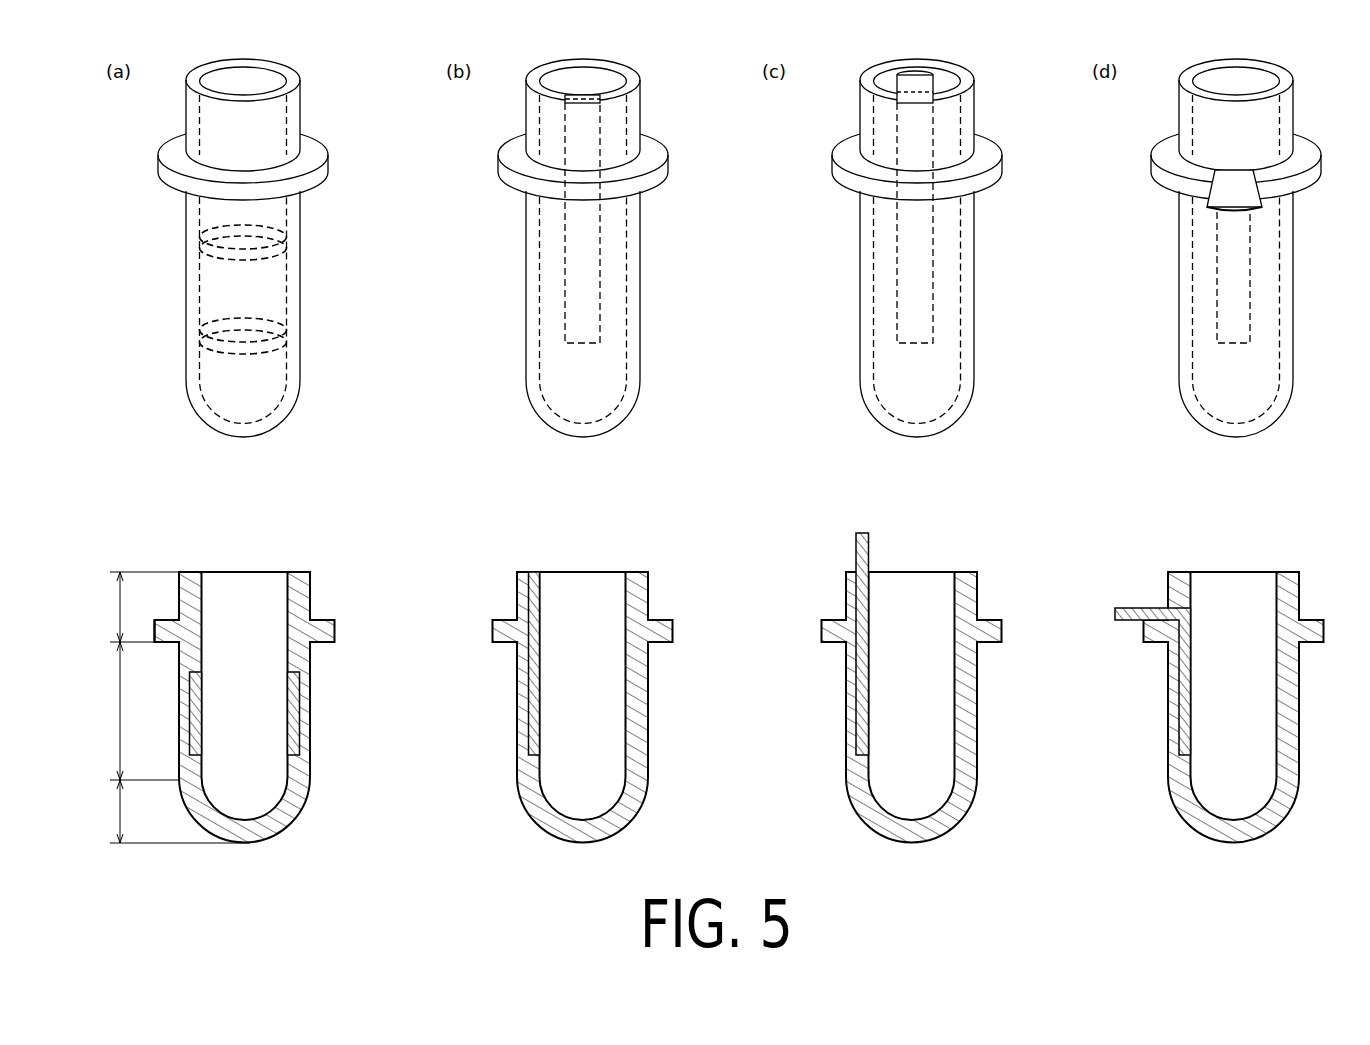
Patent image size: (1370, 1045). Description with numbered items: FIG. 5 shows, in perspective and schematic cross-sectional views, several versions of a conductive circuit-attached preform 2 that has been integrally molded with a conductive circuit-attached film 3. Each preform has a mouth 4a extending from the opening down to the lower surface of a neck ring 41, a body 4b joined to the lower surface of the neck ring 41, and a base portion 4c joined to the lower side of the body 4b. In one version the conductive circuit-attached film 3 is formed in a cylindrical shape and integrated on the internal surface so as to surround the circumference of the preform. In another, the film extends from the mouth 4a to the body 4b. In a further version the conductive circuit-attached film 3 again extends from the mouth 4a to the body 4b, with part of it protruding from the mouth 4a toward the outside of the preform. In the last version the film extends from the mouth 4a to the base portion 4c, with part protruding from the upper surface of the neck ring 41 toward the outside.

The conductive circuit-attached preform 2 is at (305, 43).
The conductive circuit-attached film 3 is at (281, 250).
The neck ring 41 is at (327, 618).
The mouth 4a is at (137, 607).
The body 4b is at (136, 711).
The base portion 4c is at (172, 811).